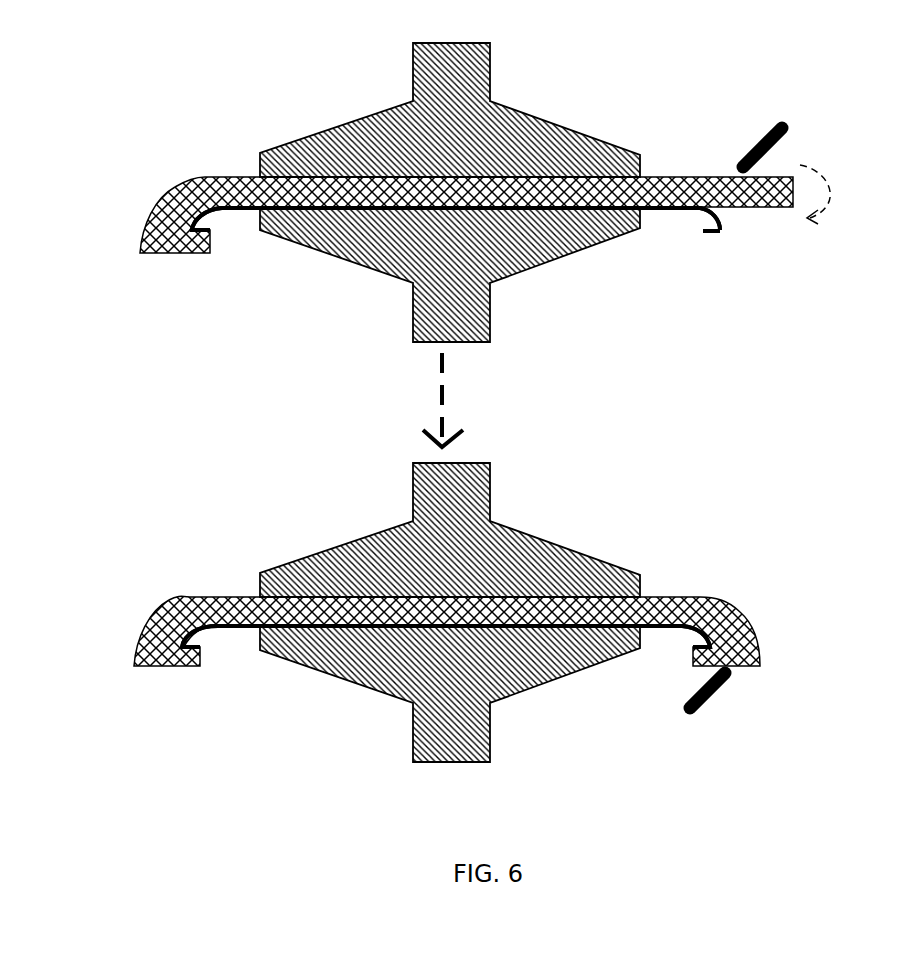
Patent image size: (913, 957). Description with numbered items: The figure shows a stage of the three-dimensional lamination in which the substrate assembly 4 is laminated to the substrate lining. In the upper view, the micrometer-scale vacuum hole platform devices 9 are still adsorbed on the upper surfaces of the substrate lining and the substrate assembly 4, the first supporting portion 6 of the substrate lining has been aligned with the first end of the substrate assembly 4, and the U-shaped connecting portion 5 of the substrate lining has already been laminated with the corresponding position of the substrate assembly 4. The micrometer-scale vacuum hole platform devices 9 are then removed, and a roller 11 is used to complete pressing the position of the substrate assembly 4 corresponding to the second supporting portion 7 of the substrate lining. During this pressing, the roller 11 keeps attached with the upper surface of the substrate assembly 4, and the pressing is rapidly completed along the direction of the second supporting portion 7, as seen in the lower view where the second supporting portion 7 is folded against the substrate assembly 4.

The substrate assembly 4 is at (727, 617).
The U-shaped connecting portion 5 is at (660, 208).
The first supporting portion 6 is at (202, 229).
The second supporting portion 7 is at (712, 235).
The micrometer-scale vacuum hole platform device 9 is at (490, 85).
The roller 11 is at (783, 123).